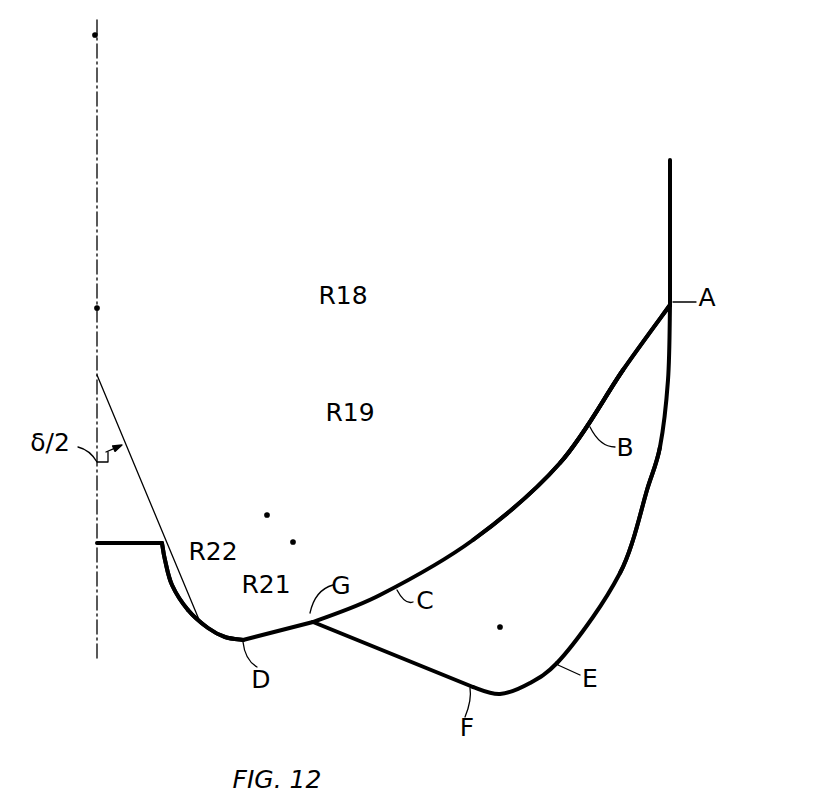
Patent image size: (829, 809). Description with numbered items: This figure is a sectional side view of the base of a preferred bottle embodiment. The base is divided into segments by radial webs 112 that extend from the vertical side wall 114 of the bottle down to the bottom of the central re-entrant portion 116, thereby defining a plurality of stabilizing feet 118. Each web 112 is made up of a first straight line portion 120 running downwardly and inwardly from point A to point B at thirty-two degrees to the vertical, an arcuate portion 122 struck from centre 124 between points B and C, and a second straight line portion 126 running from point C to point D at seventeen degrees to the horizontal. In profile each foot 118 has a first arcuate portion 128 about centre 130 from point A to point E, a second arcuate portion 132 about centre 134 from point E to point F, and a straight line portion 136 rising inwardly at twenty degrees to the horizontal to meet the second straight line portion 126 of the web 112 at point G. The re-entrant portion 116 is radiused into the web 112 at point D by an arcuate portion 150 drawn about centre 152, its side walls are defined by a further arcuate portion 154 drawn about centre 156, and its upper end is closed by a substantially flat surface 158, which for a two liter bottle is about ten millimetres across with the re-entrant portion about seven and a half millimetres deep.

The radial web 112 is at (561, 420).
The vertical side wall 114 is at (672, 241).
The central re-entrant portion 116 is at (141, 520).
The stabilizing foot 118 is at (636, 583).
The first straight line portion 120 is at (623, 370).
The arcuate portion 122 is at (473, 543).
The centre 124 is at (494, 499).
The second straight line portion 126 is at (280, 637).
The first arcuate portion 128 is at (636, 525).
The centre 130 is at (630, 486).
The second arcuate portion 132 is at (513, 697).
The centre 134 is at (520, 674).
The straight line portion 136 is at (407, 655).
The arcuate portion 150 is at (203, 630).
The centre 152 is at (233, 615).
The further arcuate portion 154 is at (170, 593).
The centre 156 is at (183, 574).
The flat surface 158 is at (117, 548).